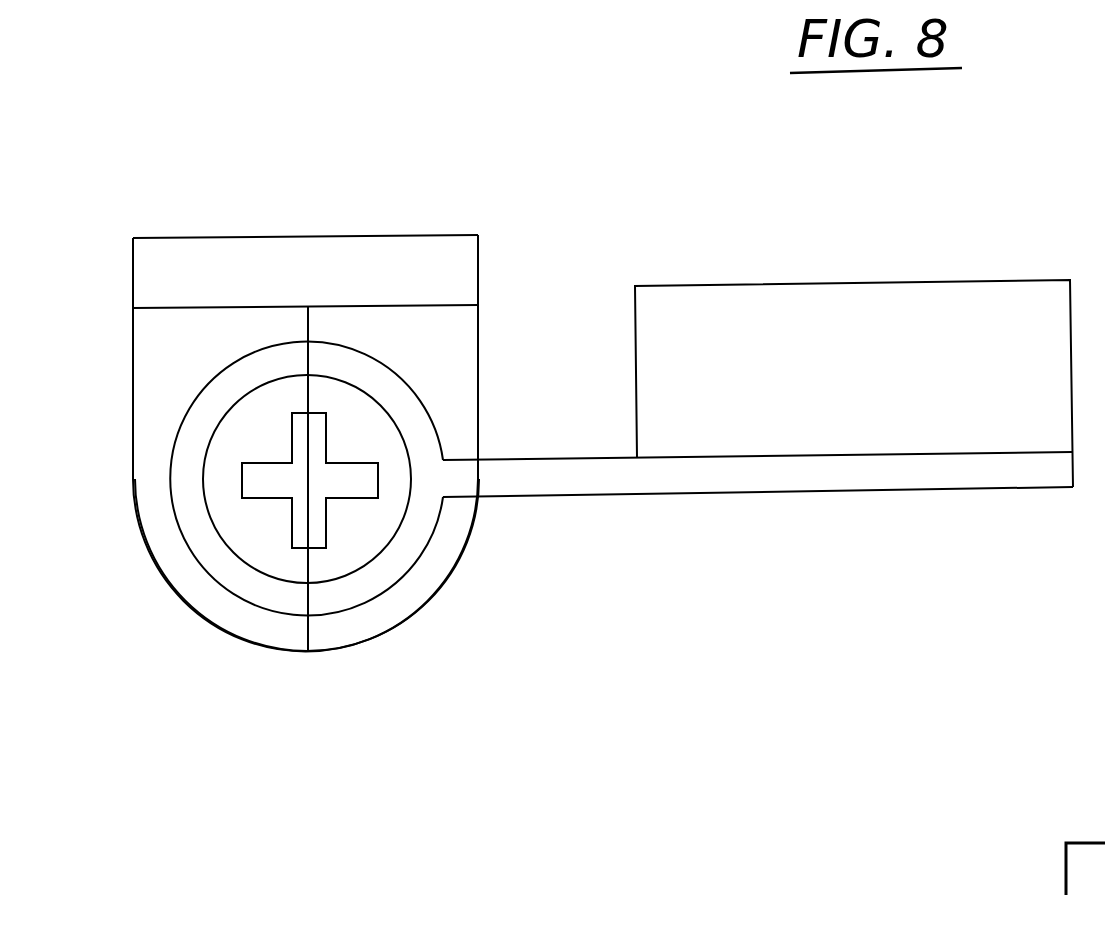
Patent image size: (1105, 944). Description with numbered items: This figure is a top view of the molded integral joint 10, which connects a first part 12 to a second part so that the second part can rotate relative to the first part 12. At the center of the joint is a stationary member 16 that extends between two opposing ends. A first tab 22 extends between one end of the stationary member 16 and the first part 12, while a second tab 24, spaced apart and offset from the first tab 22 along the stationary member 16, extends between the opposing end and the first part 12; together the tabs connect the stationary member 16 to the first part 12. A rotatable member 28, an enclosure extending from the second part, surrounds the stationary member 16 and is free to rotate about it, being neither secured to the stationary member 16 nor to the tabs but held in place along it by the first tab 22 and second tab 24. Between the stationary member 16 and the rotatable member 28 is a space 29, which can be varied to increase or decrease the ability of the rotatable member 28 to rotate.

The integral joint 10 is at (230, 674).
The first part 12 is at (478, 268).
The stationary member 16 is at (268, 480).
The first tab 22 is at (468, 550).
The second tab 24 is at (155, 563).
The rotatable member 28 is at (345, 592).
The space 29 is at (268, 412).